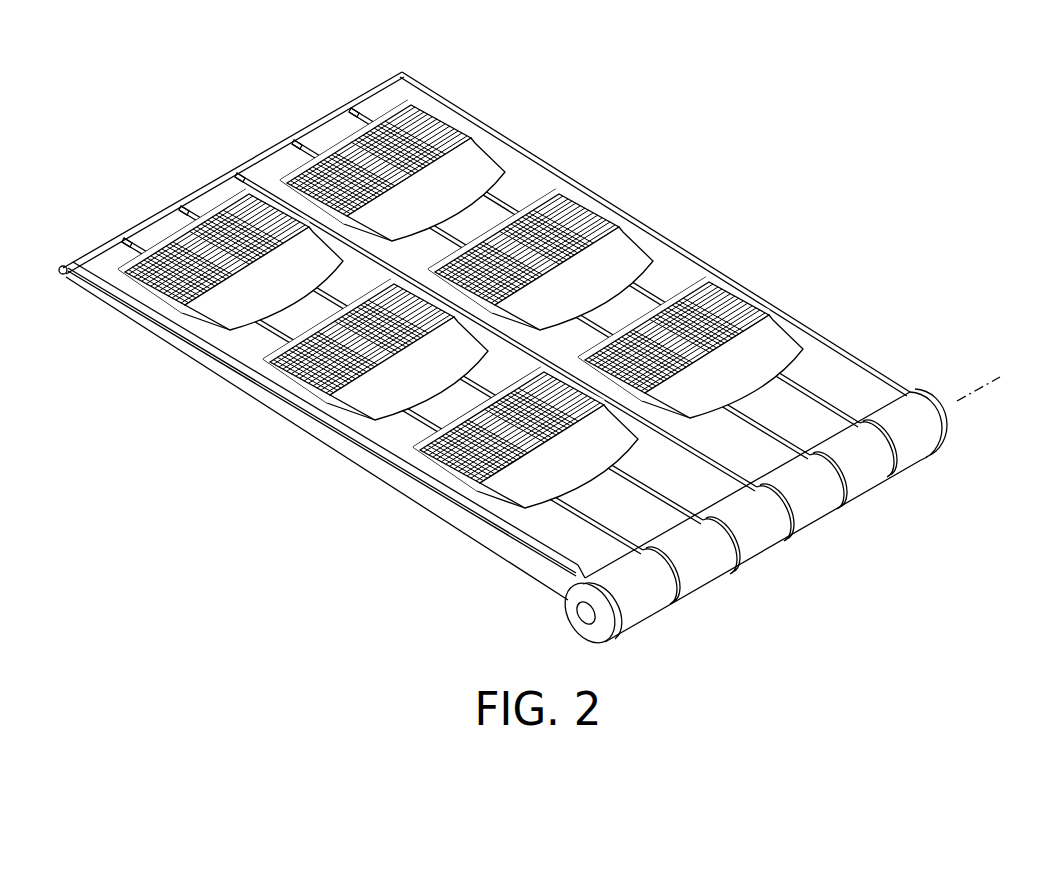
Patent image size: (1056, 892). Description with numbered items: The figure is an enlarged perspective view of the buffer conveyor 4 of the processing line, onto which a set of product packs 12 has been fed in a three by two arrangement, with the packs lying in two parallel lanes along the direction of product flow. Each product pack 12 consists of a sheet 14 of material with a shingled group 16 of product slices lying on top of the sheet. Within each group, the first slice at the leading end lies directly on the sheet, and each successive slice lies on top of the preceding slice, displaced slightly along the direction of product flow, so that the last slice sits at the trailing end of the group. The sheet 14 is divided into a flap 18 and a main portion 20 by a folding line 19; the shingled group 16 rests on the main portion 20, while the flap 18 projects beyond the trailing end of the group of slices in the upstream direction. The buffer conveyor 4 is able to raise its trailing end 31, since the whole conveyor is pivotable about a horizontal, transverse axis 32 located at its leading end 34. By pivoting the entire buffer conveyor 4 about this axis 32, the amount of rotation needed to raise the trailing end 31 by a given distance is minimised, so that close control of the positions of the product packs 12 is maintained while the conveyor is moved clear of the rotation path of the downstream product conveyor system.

The buffer conveyor 4 is at (660, 158).
The product pack 12 is at (470, 104).
The sheet 14 is at (815, 360).
The shingled group 16 is at (722, 324).
The flap 18 is at (570, 480).
The folding line 19 is at (783, 356).
The main portion 20 is at (400, 466).
The trailing end 31 is at (402, 72).
The axis 32 is at (946, 404).
The leading end 34 is at (948, 421).